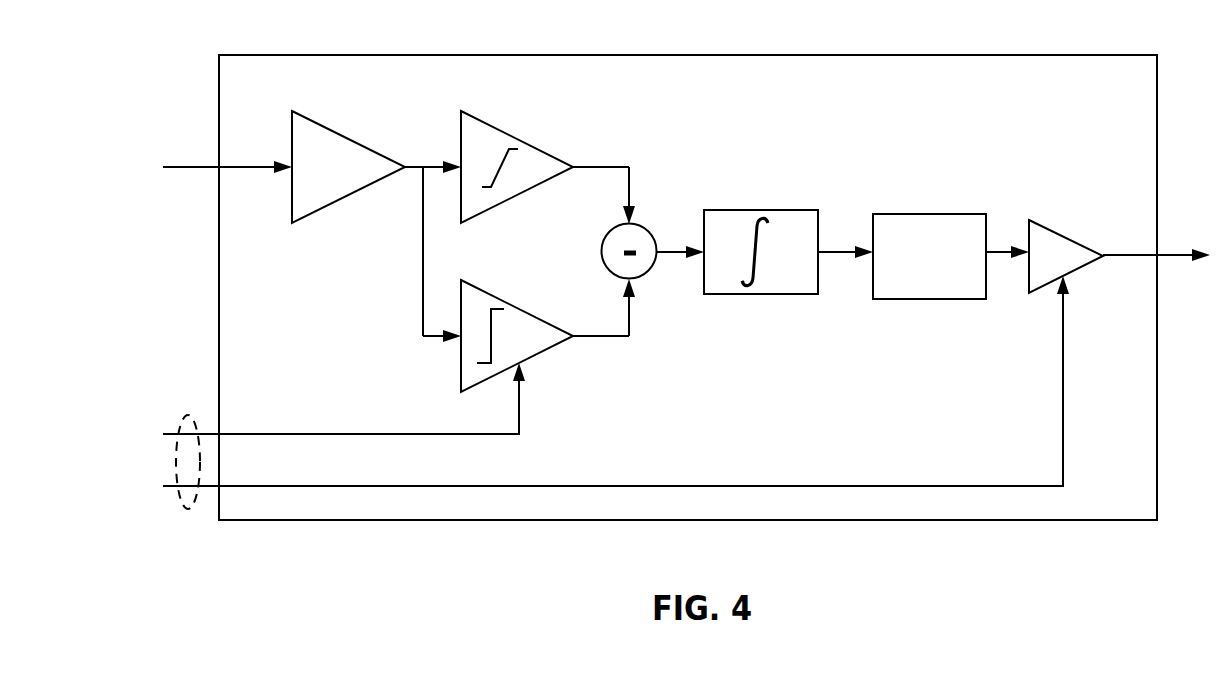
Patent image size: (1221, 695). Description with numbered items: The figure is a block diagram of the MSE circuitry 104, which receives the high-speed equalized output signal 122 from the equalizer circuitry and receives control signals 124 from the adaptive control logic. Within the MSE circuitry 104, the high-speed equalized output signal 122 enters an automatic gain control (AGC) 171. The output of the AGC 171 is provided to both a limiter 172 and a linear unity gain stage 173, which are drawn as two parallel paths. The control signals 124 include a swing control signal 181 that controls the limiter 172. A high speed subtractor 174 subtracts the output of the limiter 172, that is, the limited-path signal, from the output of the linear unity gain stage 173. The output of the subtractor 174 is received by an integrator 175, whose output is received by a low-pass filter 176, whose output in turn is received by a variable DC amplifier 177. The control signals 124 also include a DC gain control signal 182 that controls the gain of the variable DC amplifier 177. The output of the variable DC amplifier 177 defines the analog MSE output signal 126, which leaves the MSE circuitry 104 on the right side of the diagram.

The MSE circuitry 104 is at (950, 55).
The high-speed equalized output signal 122 is at (183, 165).
The control signals 124 is at (186, 414).
The analog MSE output signal 126 is at (1185, 254).
The automatic gain control 171 is at (345, 197).
The limiter 172 is at (543, 352).
The linear unity gain stage 173 is at (546, 152).
The high speed subtractor 174 is at (601, 252).
The integrator 175 is at (755, 210).
The low-pass filter 176 is at (930, 214).
The variable DC amplifier 177 is at (1062, 236).
The swing control signal 181 is at (312, 433).
The DC gain control signal 182 is at (742, 486).